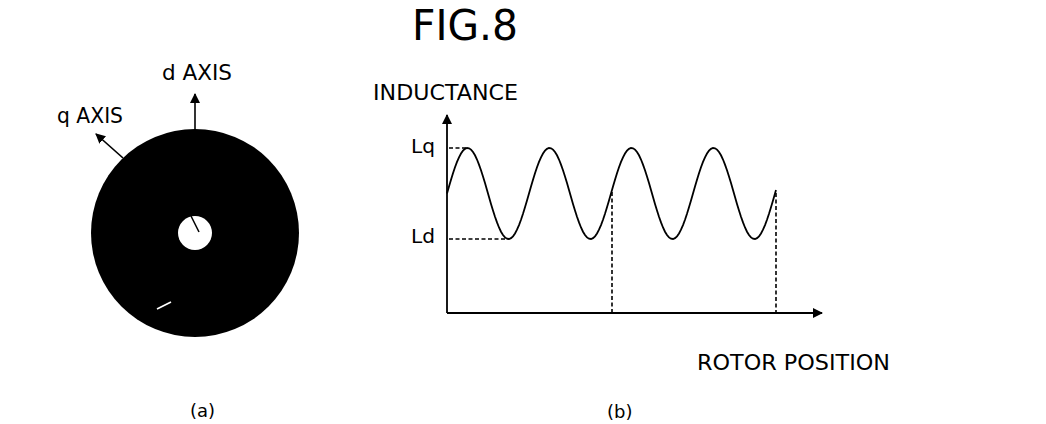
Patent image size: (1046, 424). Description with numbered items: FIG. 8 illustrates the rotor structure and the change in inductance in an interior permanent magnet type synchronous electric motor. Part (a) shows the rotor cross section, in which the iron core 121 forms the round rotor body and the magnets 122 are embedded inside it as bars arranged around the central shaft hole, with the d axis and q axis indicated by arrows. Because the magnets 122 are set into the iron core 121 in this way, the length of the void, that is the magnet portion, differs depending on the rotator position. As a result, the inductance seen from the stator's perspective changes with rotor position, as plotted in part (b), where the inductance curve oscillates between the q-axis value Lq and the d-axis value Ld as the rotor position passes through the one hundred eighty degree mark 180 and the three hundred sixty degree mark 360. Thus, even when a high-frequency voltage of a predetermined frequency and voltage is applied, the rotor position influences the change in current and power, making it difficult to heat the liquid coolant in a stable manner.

The iron core 121 is at (207, 263).
The magnet 122 is at (163, 270).
The rotor position 180 degrees marker 180 is at (608, 267).
The rotor position 360 degrees marker 360 is at (774, 268).